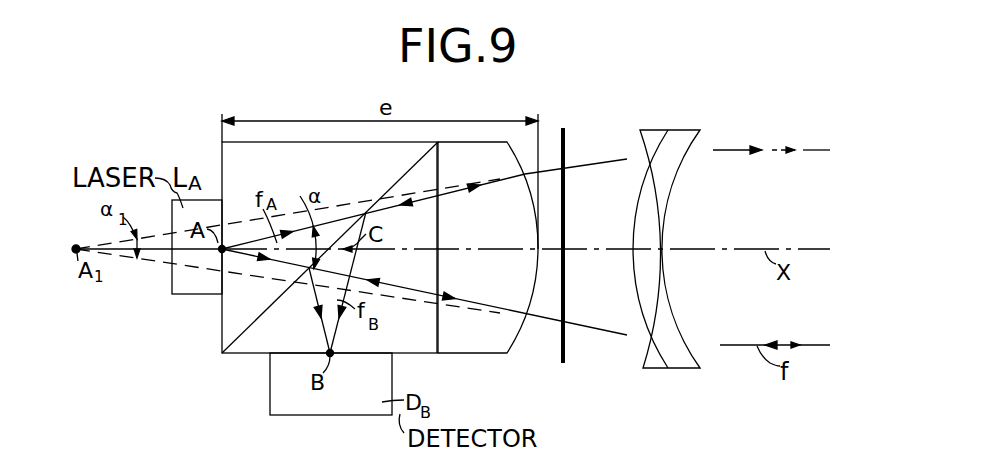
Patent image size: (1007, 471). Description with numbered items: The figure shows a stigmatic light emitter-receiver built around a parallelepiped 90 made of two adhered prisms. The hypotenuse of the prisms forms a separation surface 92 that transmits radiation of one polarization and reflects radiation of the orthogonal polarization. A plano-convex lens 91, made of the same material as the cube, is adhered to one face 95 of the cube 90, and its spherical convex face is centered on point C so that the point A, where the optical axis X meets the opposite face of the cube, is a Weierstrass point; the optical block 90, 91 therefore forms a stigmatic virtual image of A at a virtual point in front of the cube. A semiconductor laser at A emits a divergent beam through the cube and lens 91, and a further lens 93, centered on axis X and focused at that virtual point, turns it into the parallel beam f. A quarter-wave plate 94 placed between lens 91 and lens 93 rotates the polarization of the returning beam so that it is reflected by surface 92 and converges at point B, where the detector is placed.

The parallelepiped 90 is at (263, 342).
The plano-convex lens 91 is at (487, 342).
The separation surface 92 is at (237, 338).
The lens 93 is at (695, 359).
The quarter-wave plate 94 is at (565, 364).
The face of cube 95 is at (438, 235).